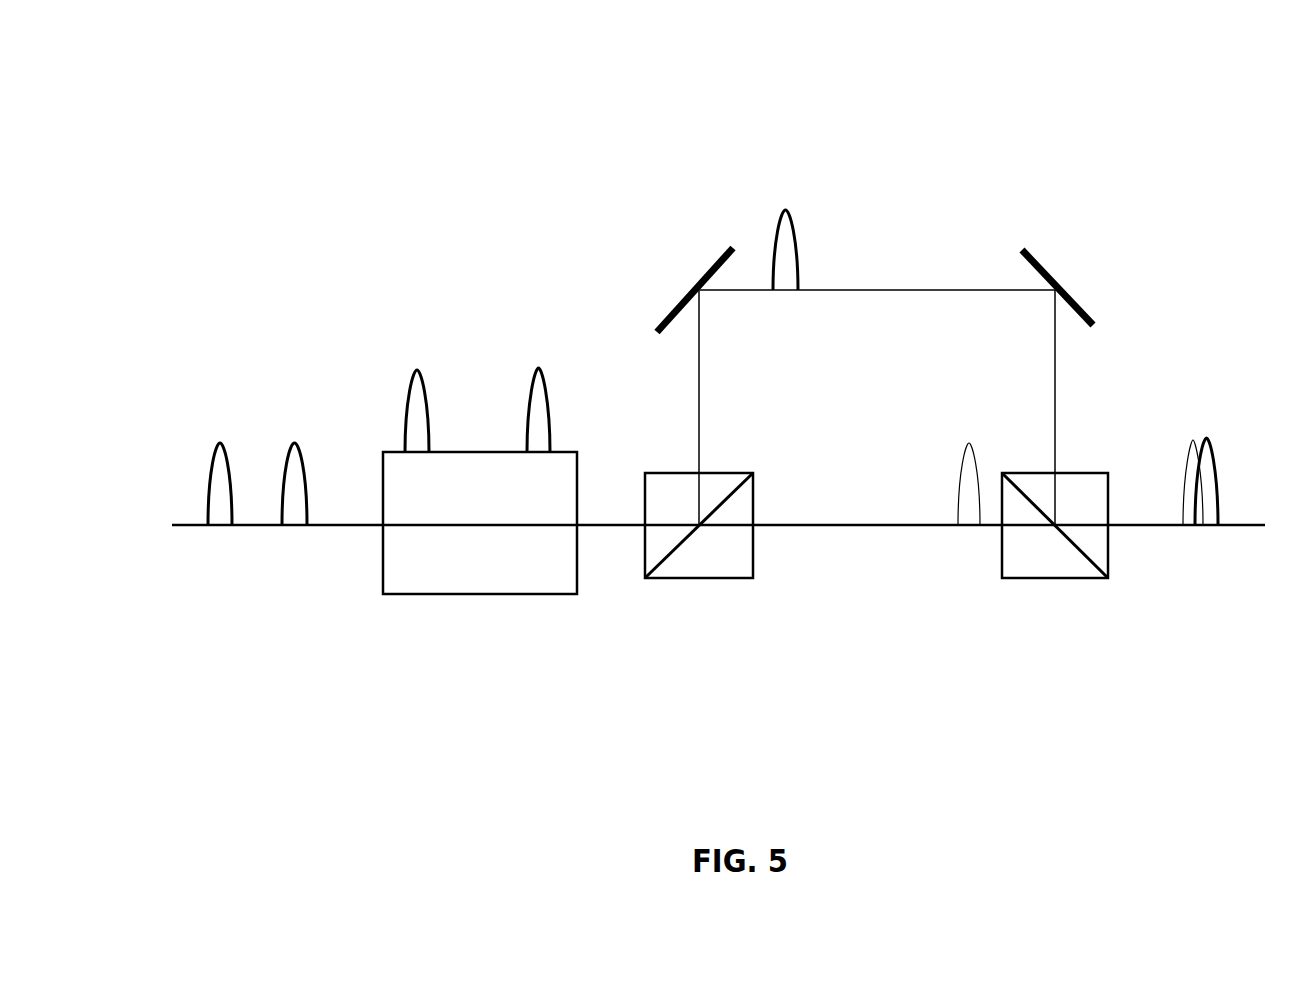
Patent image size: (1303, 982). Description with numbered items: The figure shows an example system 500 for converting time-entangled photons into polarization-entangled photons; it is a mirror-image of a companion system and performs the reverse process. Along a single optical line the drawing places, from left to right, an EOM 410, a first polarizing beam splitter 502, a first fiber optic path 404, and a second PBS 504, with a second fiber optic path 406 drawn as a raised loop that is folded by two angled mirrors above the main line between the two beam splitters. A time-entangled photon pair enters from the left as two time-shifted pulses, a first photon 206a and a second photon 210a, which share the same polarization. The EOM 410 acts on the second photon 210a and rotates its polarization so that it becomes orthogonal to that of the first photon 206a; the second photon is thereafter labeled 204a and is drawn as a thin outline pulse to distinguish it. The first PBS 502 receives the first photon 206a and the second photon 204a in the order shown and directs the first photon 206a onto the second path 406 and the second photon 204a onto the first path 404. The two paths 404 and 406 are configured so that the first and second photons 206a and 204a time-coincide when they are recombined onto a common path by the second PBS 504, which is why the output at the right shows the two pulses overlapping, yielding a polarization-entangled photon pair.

The example system 500 is at (1287, 81).
The first fiber optic path 404 is at (883, 527).
The second fiber optic path 406 is at (875, 288).
The EOM 410 is at (475, 594).
The first polarizing beam splitter 502 is at (700, 578).
The second PBS 504 is at (1058, 578).
The second photon 210a is at (232, 458).
The first photon 206a is at (303, 460).
The second photon with adjusted polarization 204a is at (962, 455).